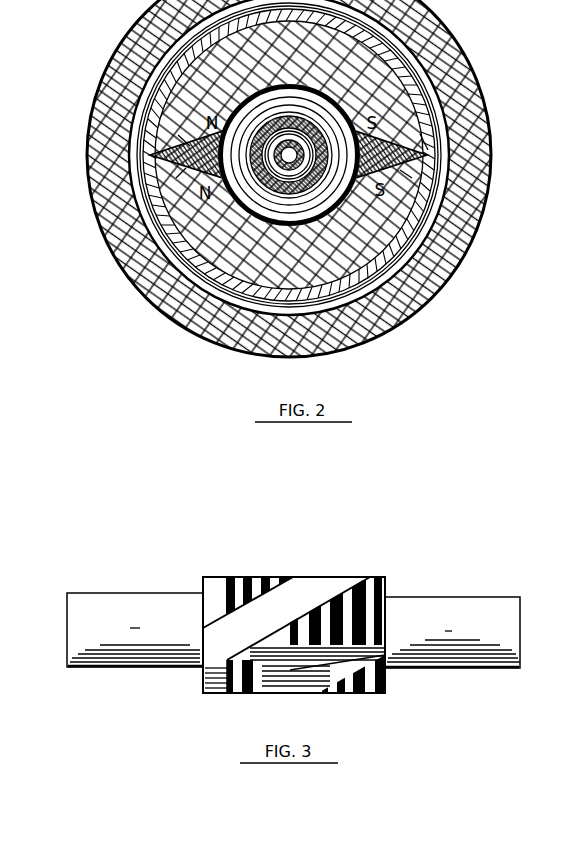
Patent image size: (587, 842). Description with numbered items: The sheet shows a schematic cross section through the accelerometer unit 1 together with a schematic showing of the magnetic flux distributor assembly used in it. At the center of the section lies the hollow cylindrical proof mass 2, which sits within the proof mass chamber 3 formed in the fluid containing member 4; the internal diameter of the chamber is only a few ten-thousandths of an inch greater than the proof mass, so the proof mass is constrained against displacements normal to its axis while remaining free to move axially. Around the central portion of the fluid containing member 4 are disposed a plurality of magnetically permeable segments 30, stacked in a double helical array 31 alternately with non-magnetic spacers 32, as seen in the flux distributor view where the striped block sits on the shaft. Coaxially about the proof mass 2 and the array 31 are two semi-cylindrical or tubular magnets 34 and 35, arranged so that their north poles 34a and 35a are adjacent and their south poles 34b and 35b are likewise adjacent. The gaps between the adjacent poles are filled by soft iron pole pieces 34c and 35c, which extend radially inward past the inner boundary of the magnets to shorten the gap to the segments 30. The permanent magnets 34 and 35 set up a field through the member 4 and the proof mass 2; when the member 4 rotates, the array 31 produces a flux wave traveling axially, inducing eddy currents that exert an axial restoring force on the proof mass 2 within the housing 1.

In FIG. 2, the accelerometer unit 1 is at (453, 34).
In FIG. 2, the proof mass 2 is at (303, 200).
In FIG. 2, the proof mass chamber 3 is at (296, 180).
In FIG. 2, the fluid containing member 4 is at (282, 127).
In FIG. 3, the fluid containing member 4 is at (386, 602).
In FIG. 2, the magnetically permeable segments 30 is at (338, 162).
In FIG. 3, the magnetically permeable segments 30 is at (248, 684).
In FIG. 3, the double helical array 31 is at (227, 659).
In FIG. 3, the non-magnetic spacers 32 is at (228, 684).
In FIG. 2, the semi-cylindrical magnet 34 is at (204, 68).
In FIG. 2, the north pole 34a is at (176, 129).
In FIG. 2, the south pole 34b is at (409, 131).
In FIG. 2, the soft iron pole piece 34c is at (156, 158).
In FIG. 2, the semi-cylindrical magnet 35 is at (211, 253).
In FIG. 2, the north pole 35a is at (173, 184).
In FIG. 2, the south pole 35b is at (407, 182).
In FIG. 2, the soft iron pole piece 35c is at (429, 168).